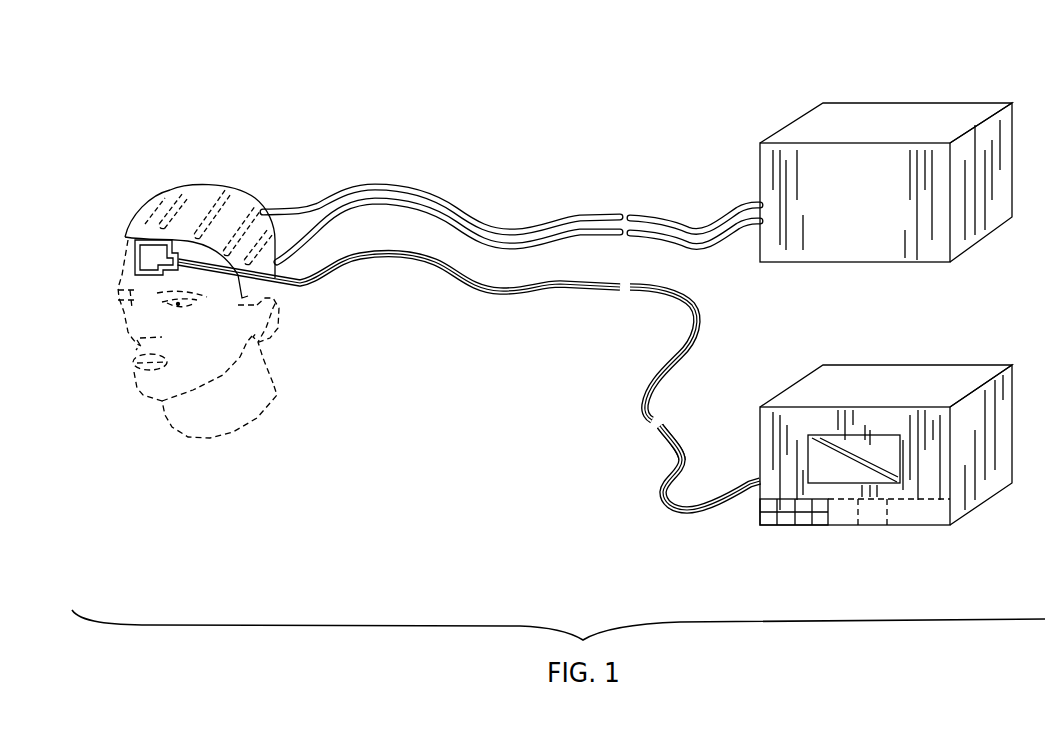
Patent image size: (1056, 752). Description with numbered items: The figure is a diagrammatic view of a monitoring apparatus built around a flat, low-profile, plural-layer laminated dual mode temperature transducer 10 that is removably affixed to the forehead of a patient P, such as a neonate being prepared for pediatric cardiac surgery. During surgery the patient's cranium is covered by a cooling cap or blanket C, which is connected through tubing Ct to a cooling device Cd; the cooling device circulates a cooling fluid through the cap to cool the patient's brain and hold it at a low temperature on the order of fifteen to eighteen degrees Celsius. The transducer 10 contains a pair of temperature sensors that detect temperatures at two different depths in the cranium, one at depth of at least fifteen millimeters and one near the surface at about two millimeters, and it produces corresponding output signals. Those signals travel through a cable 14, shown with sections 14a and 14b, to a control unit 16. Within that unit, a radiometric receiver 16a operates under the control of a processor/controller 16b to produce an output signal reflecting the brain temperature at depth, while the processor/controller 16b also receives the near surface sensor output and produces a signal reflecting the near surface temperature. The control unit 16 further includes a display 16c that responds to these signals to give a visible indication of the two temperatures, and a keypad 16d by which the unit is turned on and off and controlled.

The transducer 10 is at (120, 251).
The cooling cap C is at (157, 223).
The patient P is at (120, 316).
The cable 14 is at (707, 303).
The tube first section 14a is at (675, 437).
The tube second section 14b is at (340, 263).
The cooling device Cd is at (806, 128).
The tubing Ct is at (688, 178).
The control unit 16 is at (953, 370).
The radiometric receiver 16a is at (844, 517).
The processor/controller 16b is at (873, 517).
The display 16c is at (873, 448).
The keypad 16d is at (805, 517).